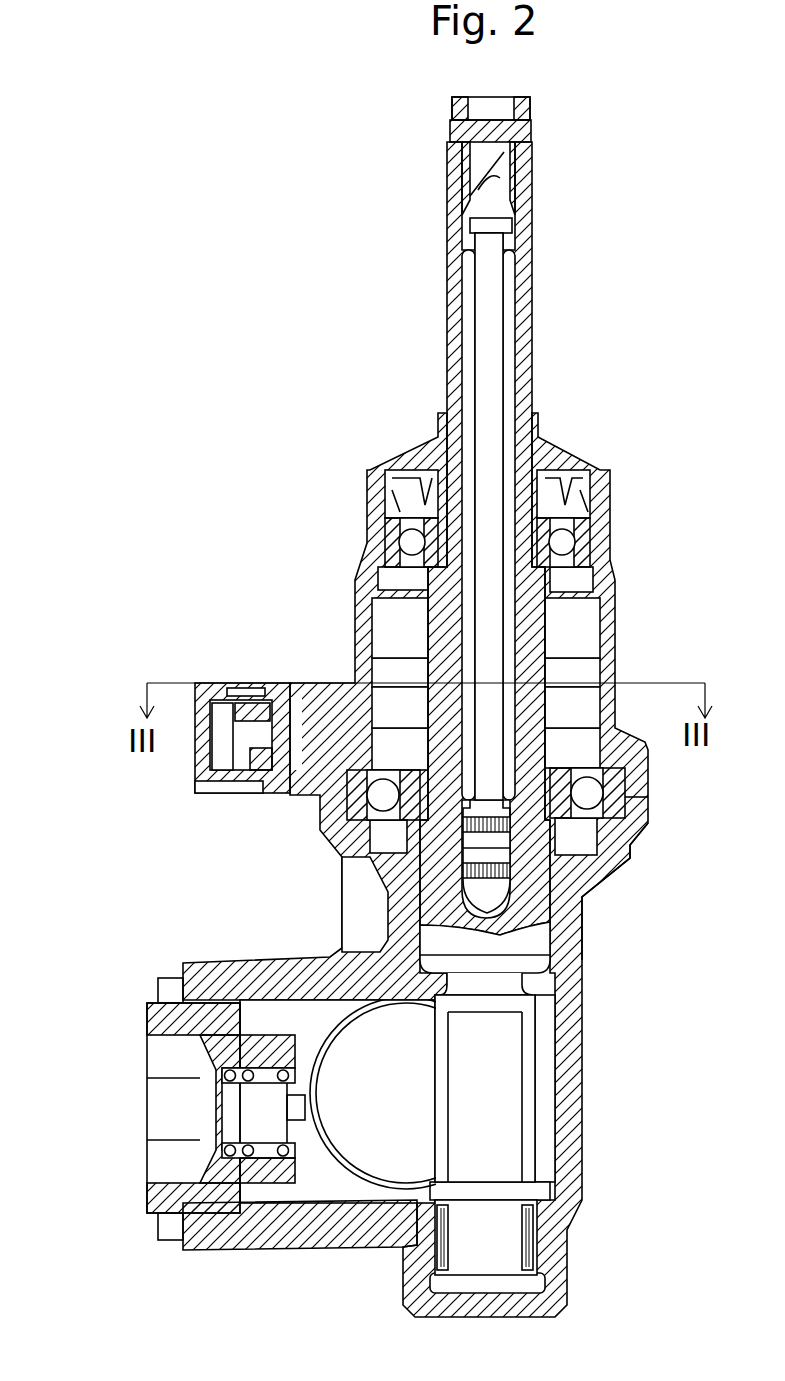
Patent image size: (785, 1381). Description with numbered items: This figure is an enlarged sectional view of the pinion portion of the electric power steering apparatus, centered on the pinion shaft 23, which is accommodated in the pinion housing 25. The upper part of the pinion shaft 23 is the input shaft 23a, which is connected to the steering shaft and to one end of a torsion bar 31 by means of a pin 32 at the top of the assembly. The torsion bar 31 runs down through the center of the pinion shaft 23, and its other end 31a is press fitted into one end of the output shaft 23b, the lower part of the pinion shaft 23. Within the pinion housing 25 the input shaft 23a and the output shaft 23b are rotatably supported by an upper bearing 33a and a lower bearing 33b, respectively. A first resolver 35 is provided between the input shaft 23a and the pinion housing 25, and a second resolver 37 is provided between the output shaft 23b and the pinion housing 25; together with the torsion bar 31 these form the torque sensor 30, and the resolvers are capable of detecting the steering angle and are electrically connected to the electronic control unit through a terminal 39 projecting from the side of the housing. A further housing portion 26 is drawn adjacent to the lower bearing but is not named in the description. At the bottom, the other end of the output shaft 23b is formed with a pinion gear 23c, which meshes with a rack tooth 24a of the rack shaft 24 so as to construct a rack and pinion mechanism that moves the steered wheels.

The pinion shaft 23 is at (535, 196).
The input shaft 23a is at (532, 355).
The output shaft 23b is at (542, 940).
The pinion gear 23c is at (527, 1100).
The rack shaft 24 is at (350, 1140).
The rack tooth 24a is at (442, 1130).
The pinion housing 25 is at (650, 762).
The housing lower portion 26 is at (633, 863).
The torque sensor 30 is at (393, 653).
The torsion bar 31 is at (497, 286).
The other end of the torsion bar 31a is at (462, 875).
The pin 32 is at (450, 130).
The bearing 33a is at (567, 540).
The bearing 33b is at (592, 799).
The first resolver 35 is at (362, 601).
The second resolver 37 is at (362, 642).
The terminal 39 is at (345, 760).